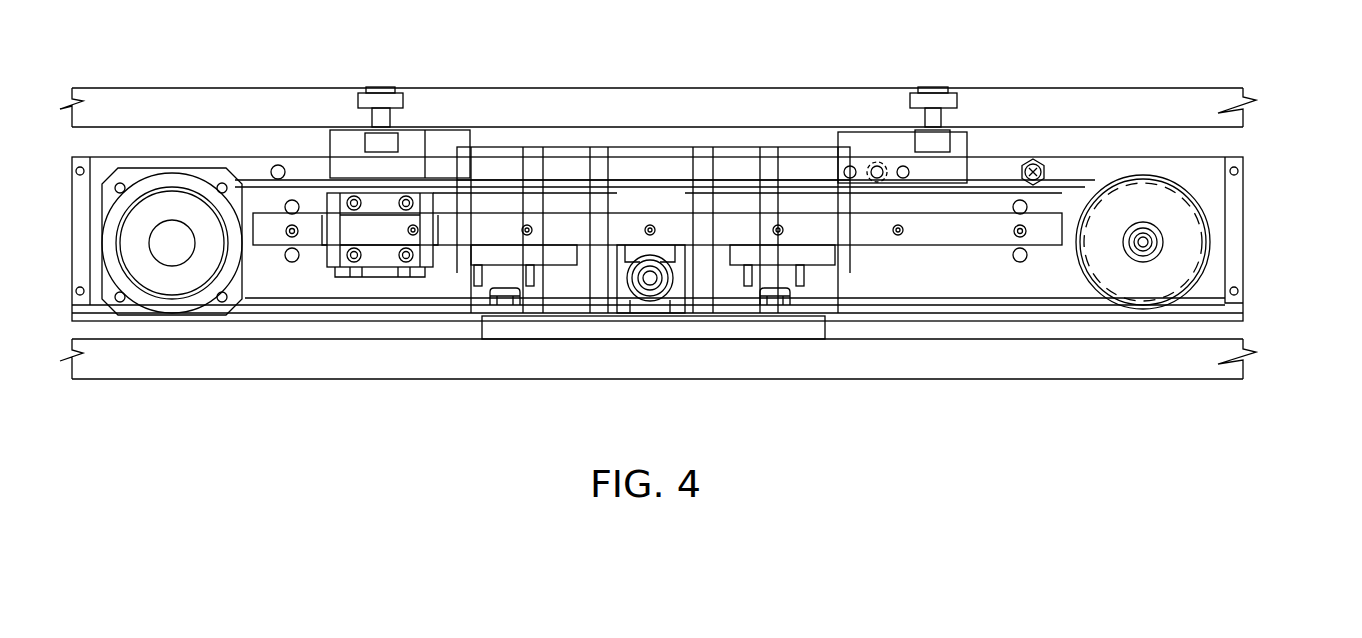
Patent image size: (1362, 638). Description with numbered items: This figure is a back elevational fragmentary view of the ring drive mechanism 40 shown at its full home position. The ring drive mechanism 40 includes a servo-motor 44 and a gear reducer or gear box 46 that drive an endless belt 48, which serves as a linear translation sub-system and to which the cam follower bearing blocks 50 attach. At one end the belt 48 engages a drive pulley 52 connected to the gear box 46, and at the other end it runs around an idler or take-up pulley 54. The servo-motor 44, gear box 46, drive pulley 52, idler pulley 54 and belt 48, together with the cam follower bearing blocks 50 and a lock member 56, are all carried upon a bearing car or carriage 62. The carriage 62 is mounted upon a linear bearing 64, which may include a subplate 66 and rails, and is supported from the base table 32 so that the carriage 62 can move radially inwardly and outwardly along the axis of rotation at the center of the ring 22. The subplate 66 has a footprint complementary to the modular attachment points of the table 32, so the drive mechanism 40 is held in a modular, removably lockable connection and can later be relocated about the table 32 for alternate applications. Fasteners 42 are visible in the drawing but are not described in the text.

The ring 22 is at (1185, 92).
The base table 32 is at (883, 372).
The ring drive mechanism 40 is at (1252, 231).
The fasteners 42 is at (358, 132).
The servo-motor 44 is at (120, 297).
The gear box 46 is at (238, 168).
The endless belt 48 is at (1082, 157).
The cam follower bearing blocks 50 is at (415, 133).
The drive pulley 52 is at (172, 172).
The idler pulley 54 is at (1180, 258).
The lock member 56 is at (872, 138).
The bearing car 62 is at (1243, 158).
The linear bearing 64 is at (462, 292).
The subplate 66 is at (704, 333).